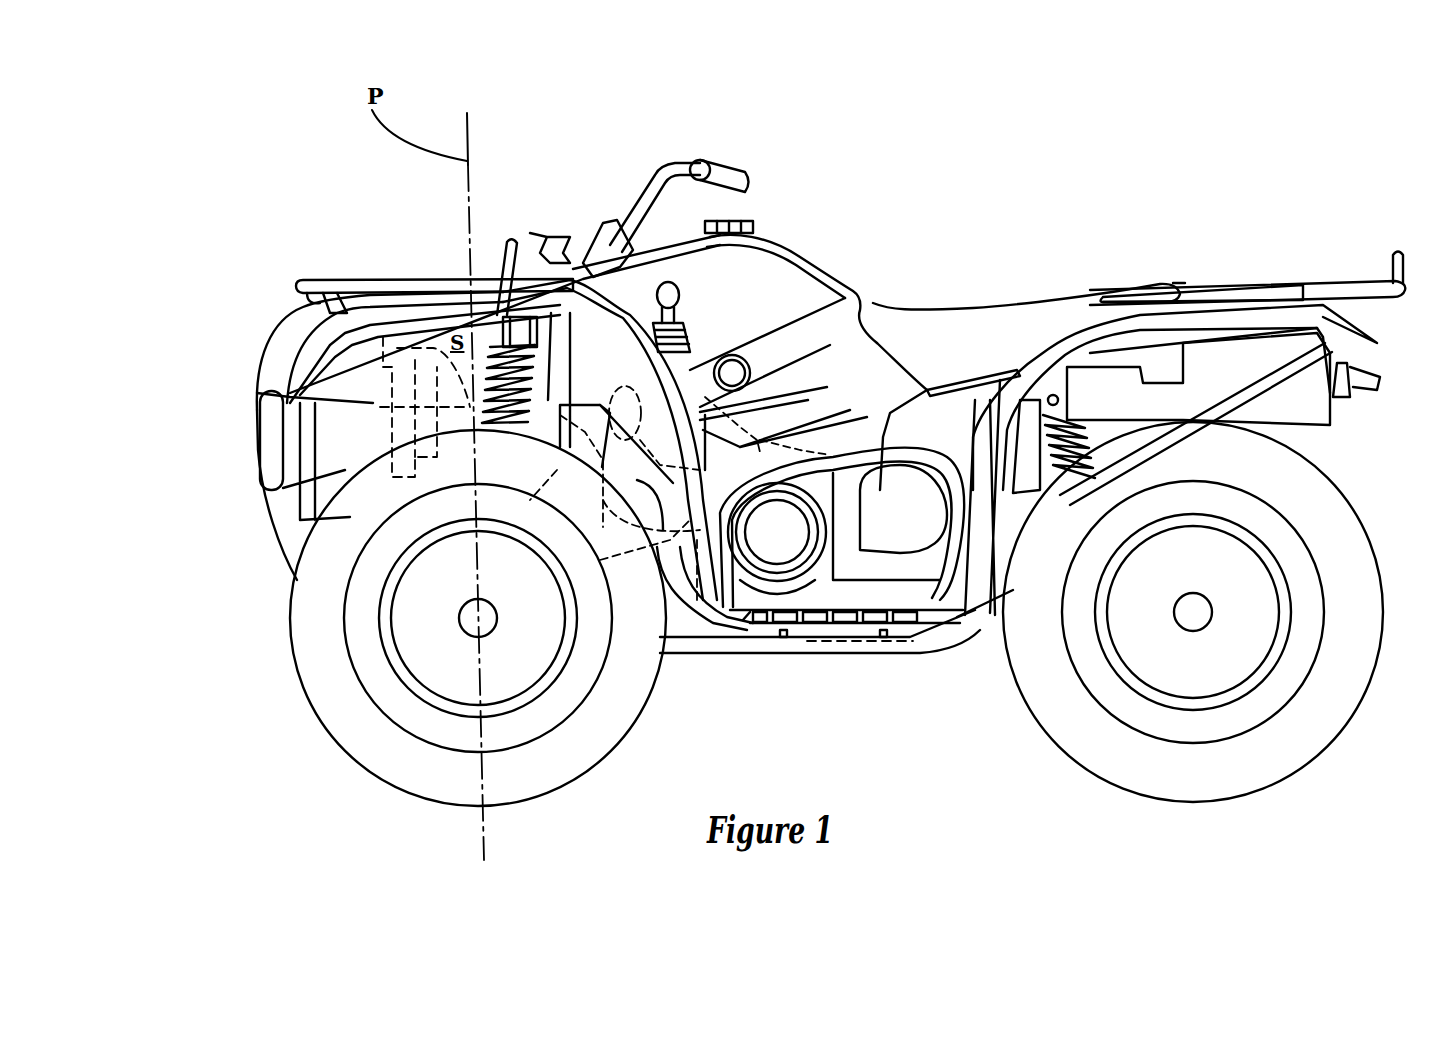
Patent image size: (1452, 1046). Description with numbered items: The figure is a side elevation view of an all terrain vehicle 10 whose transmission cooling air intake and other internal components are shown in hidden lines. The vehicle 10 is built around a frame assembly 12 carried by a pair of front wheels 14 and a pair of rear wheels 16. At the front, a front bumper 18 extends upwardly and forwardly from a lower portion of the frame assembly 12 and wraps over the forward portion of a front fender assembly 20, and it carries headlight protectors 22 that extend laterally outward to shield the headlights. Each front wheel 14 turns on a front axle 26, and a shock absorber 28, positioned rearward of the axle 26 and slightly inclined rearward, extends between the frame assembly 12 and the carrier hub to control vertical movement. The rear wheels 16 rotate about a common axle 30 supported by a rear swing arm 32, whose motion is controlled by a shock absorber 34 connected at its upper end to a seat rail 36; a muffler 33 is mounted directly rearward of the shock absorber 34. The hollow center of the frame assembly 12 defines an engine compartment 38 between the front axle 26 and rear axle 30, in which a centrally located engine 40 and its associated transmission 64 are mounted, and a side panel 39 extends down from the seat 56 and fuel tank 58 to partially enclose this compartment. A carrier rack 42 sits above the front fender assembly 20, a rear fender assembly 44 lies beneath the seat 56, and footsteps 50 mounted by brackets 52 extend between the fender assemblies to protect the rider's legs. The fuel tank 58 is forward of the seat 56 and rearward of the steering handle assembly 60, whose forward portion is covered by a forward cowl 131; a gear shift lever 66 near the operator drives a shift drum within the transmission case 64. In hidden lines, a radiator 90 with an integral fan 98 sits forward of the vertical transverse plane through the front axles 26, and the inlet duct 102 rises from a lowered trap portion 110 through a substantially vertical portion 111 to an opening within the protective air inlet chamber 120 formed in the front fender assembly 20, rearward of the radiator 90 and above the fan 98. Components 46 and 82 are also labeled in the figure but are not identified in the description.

The all terrain vehicle 10 is at (977, 227).
The frame assembly 12 is at (872, 655).
The front wheels 14 is at (640, 723).
The rear wheels 16 is at (1363, 687).
The front bumper 18 is at (259, 455).
The front fender assembly 20 is at (640, 318).
The headlight protectors 22 is at (257, 393).
The front axle 26 is at (477, 637).
The shock absorber 28 is at (537, 370).
The rear axle 30 is at (1193, 631).
The rear swing arm 32 is at (1003, 620).
The muffler 33 is at (1330, 425).
The shock absorber 34 is at (1110, 440).
The seat rail 36 is at (1228, 355).
The engine compartment 38 is at (849, 440).
The side panel 39 is at (880, 372).
The engine 40 is at (773, 543).
The carrier rack 42 is at (420, 280).
The rear fender assembly 44 is at (1093, 320).
The rear carrier rack 46 is at (1327, 280).
The footsteps 50 is at (887, 650).
The brackets 52 is at (783, 637).
The seat 56 is at (1022, 303).
The fuel tank 58 is at (820, 255).
The steering handle assembly 60 is at (718, 172).
The transmission 64 is at (923, 495).
The gear shift lever 66 is at (681, 293).
The air intake 82 is at (712, 355).
The radiator 90 is at (392, 435).
The fan 98 is at (437, 445).
The inlet duct 102 is at (563, 465).
The trap portion 110 is at (617, 570).
The substantially vertical portion 111 is at (615, 493).
The air inlet chamber 120 is at (420, 332).
The forward cowl 131 is at (540, 250).